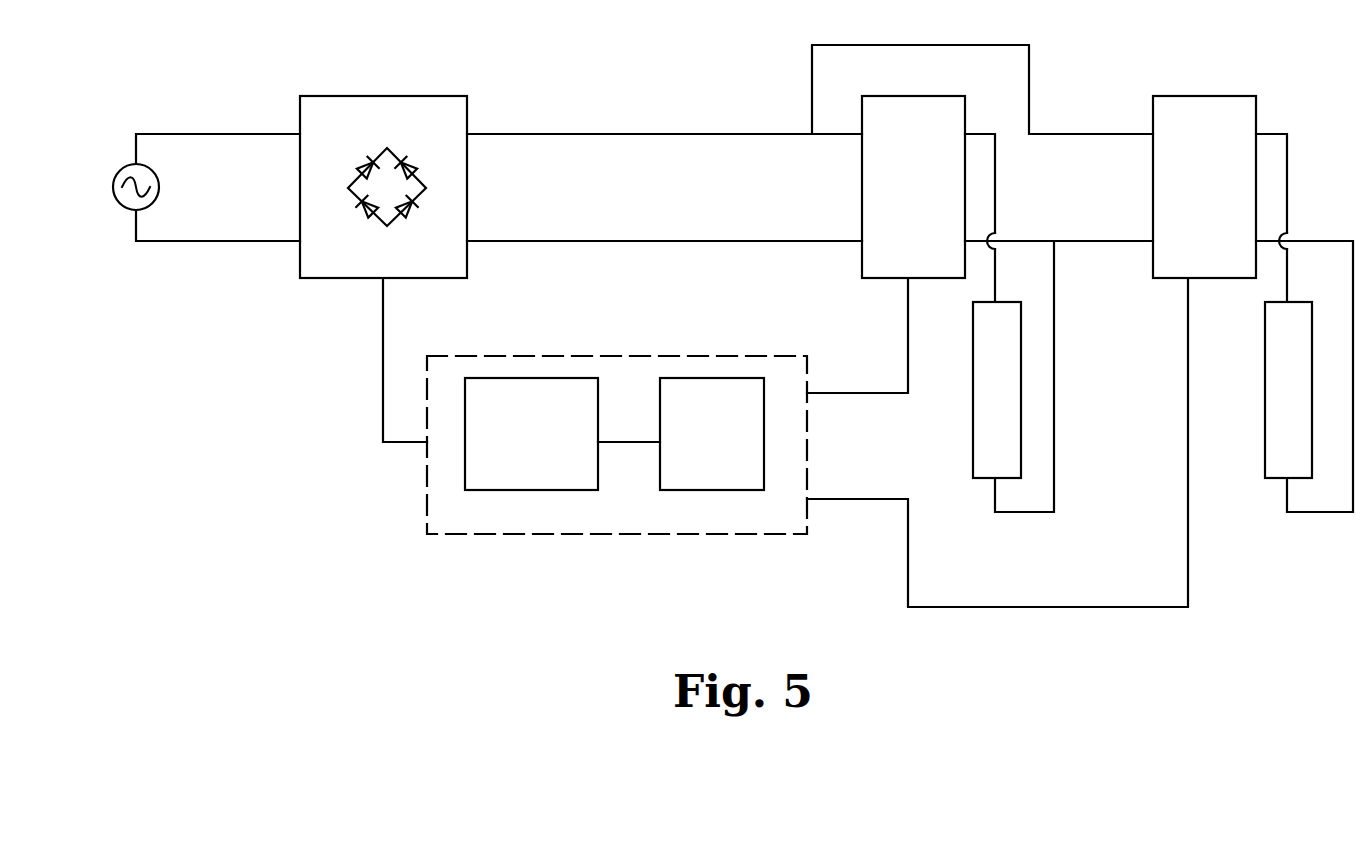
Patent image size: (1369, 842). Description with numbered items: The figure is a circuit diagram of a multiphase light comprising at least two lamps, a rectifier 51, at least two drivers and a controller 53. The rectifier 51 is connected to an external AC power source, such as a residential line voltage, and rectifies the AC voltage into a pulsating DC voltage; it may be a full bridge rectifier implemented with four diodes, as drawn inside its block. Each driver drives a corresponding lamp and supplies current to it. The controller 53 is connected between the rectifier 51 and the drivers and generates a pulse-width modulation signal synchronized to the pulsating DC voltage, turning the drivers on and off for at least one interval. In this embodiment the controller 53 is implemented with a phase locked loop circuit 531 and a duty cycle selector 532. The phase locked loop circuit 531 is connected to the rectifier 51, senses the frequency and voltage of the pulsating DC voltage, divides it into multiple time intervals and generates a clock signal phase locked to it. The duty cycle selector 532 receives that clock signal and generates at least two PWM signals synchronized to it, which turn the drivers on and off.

The rectifier 51 is at (398, 105).
The controller 53 is at (785, 442).
The phase locked loop circuit 531 is at (518, 474).
The duty cycle selector 532 is at (743, 474).